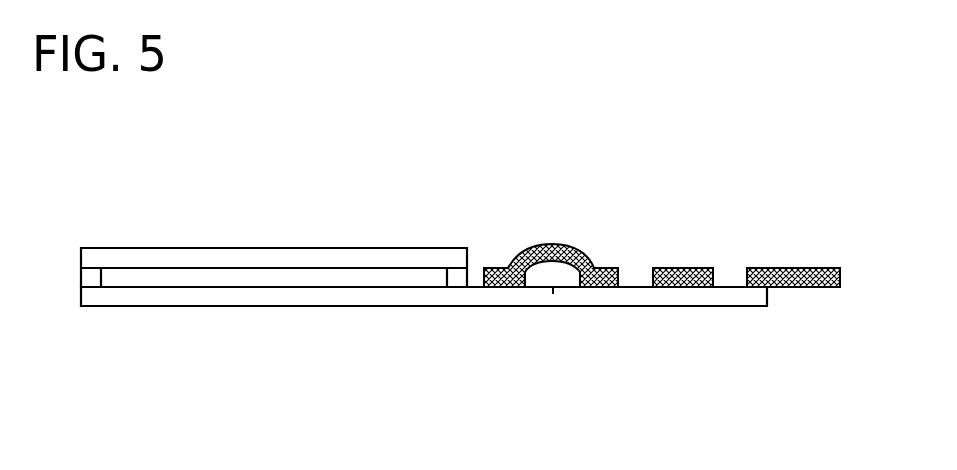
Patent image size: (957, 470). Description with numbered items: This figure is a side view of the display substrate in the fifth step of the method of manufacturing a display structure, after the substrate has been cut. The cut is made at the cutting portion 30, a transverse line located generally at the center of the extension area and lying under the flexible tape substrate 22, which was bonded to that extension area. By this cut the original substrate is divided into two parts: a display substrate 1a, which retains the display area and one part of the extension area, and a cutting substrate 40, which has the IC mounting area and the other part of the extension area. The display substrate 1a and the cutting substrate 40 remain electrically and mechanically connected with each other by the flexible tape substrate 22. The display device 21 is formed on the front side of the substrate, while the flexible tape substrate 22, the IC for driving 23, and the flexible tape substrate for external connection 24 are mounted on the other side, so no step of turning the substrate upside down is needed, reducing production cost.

The display substrate 1a is at (285, 307).
The display device 21 is at (272, 247).
The flexible tape substrate 22 is at (551, 243).
The IC for driving 23 is at (681, 267).
The flexible tape substrate for external connection 24 is at (780, 267).
The cutting portion 30 is at (553, 290).
The cutting substrate 40 is at (714, 297).